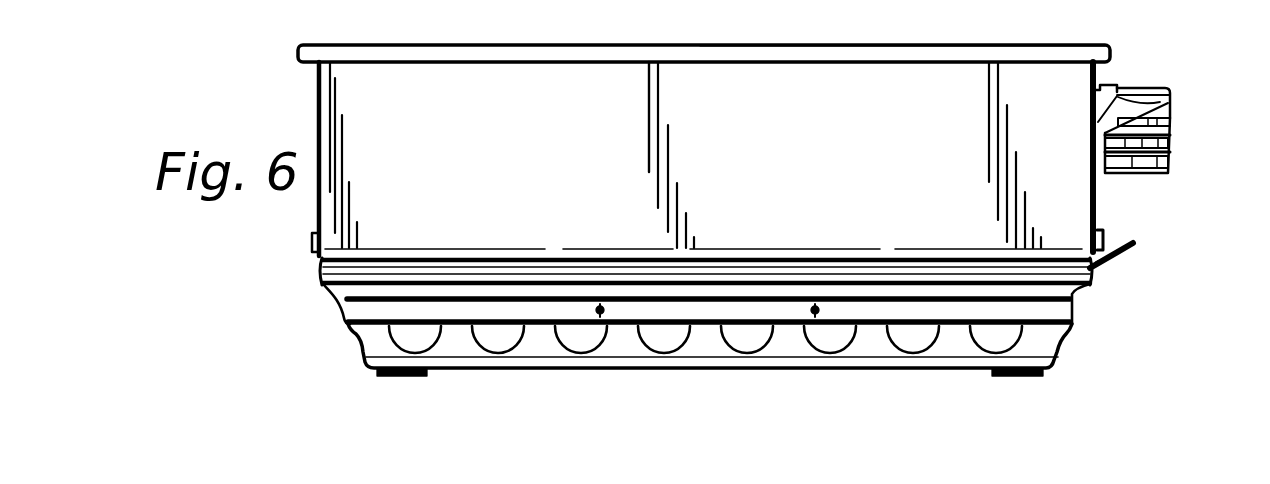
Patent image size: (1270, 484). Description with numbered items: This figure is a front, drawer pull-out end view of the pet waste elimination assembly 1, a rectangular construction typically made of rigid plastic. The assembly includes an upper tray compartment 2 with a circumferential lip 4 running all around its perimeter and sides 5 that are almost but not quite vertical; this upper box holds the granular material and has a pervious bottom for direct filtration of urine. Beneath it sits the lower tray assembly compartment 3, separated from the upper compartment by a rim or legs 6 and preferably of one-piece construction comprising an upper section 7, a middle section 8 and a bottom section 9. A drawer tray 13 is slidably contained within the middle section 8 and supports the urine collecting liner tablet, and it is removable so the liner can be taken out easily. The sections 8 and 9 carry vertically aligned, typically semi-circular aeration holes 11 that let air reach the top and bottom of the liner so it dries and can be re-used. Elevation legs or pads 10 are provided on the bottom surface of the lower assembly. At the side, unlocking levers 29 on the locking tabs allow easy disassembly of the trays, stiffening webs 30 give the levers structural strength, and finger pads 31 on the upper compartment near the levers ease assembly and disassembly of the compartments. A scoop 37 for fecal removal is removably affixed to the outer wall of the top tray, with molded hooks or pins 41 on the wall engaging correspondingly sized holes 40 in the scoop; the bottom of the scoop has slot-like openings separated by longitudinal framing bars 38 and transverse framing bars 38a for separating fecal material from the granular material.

The assembly 1 is at (476, 31).
The upper tray compartment 2 is at (626, 78).
The circumferential lip 4 is at (968, 48).
The sides 5 is at (716, 75).
The lower tray assembly compartment 3 is at (284, 276).
The rim or legs 6 is at (320, 263).
The upper section 7 is at (328, 285).
The middle section 8 is at (340, 301).
The bottom section 9 is at (366, 350).
The elevation legs or pads 10 is at (408, 377).
The aeration openings or holes 11 is at (580, 348).
The drawer tray 13 is at (870, 310).
The unlocking levers 29 is at (1133, 240).
The stiffening webs 30 is at (1125, 258).
The finger pads 31 is at (310, 243).
The scoop 37 is at (1172, 146).
The longitudinal framing bars 38 is at (1172, 136).
The transverse framing bars 38a is at (1172, 164).
The holes 40 is at (1118, 85).
The molded hooks or pins 41 is at (1172, 94).